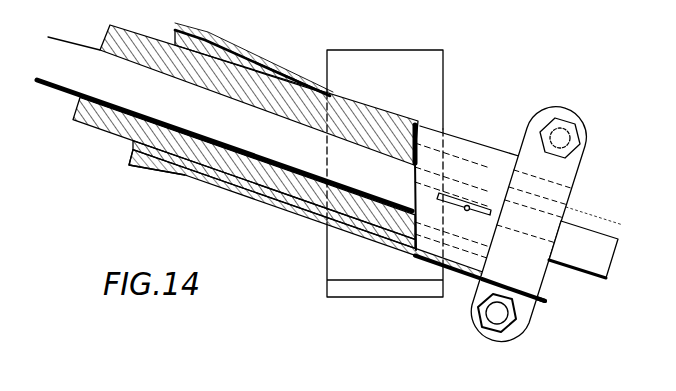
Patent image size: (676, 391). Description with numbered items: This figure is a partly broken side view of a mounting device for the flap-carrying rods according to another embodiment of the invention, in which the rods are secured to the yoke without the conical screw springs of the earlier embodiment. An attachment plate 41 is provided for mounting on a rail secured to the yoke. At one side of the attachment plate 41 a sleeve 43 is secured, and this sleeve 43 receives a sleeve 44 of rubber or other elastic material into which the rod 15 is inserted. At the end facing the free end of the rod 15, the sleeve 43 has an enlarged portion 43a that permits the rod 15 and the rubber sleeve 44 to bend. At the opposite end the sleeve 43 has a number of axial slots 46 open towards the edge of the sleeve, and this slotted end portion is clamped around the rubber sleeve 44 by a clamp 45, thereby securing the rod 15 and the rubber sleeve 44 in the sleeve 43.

The rod 15 is at (63, 80).
The attachment plate 41 is at (428, 84).
The sleeve 43 is at (300, 212).
The enlarged portion 43a is at (152, 175).
The rubber sleeve 44 is at (250, 173).
The clamp 45 is at (566, 206).
The axial slots 46 is at (472, 205).